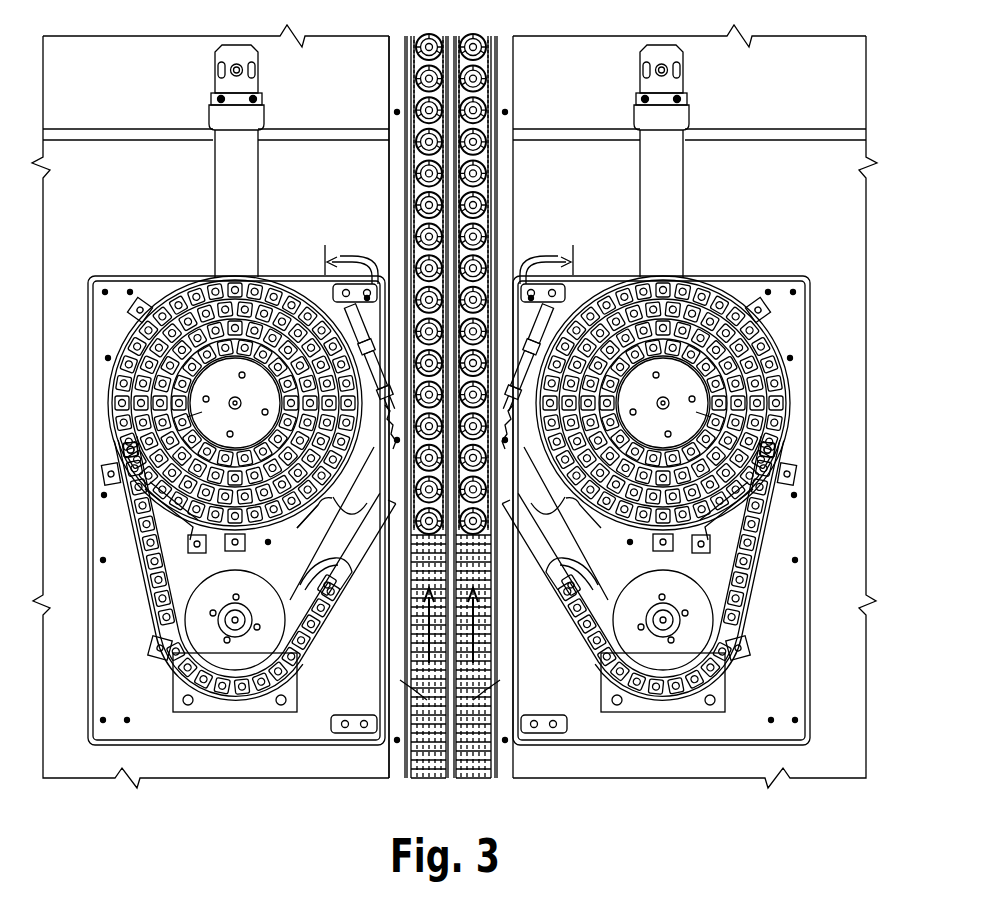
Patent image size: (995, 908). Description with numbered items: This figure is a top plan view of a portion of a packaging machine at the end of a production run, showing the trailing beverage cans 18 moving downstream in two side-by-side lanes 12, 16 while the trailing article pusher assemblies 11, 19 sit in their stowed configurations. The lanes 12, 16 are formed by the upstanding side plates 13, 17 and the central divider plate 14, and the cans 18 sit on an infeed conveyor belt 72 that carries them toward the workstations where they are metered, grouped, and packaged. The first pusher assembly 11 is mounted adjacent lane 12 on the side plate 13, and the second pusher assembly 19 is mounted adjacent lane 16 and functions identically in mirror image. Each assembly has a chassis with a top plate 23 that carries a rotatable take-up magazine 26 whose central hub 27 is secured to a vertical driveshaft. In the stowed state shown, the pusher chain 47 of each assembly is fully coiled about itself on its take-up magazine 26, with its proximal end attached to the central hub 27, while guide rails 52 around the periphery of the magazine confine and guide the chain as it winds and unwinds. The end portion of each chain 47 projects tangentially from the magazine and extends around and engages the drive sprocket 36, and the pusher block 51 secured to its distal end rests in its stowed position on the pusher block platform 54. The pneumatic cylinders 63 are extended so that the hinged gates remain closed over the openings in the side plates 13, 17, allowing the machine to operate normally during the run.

The trailing article pusher assembly 11 is at (78, 735).
The article lane 12 is at (388, 766).
The upstanding side plate 13 is at (405, 175).
The central divider plate 14 is at (452, 205).
The article lane 16 is at (514, 766).
The upstanding side plate 17 is at (494, 94).
The beverage cans 18 is at (413, 77).
The second trailing article pusher assembly 19 is at (822, 735).
The top plate 23 is at (118, 657).
The take-up magazine 26 is at (97, 401).
The central hub 27 is at (197, 397).
The drive sprocket 36 is at (204, 615).
The pusher chain 47 is at (172, 318).
The pusher block 51 is at (340, 545).
The guide rails 52 is at (130, 348).
The pusher block platform 54 is at (330, 488).
The pneumatic cylinder 63 is at (322, 318).
The infeed conveyor belt 72 is at (427, 693).